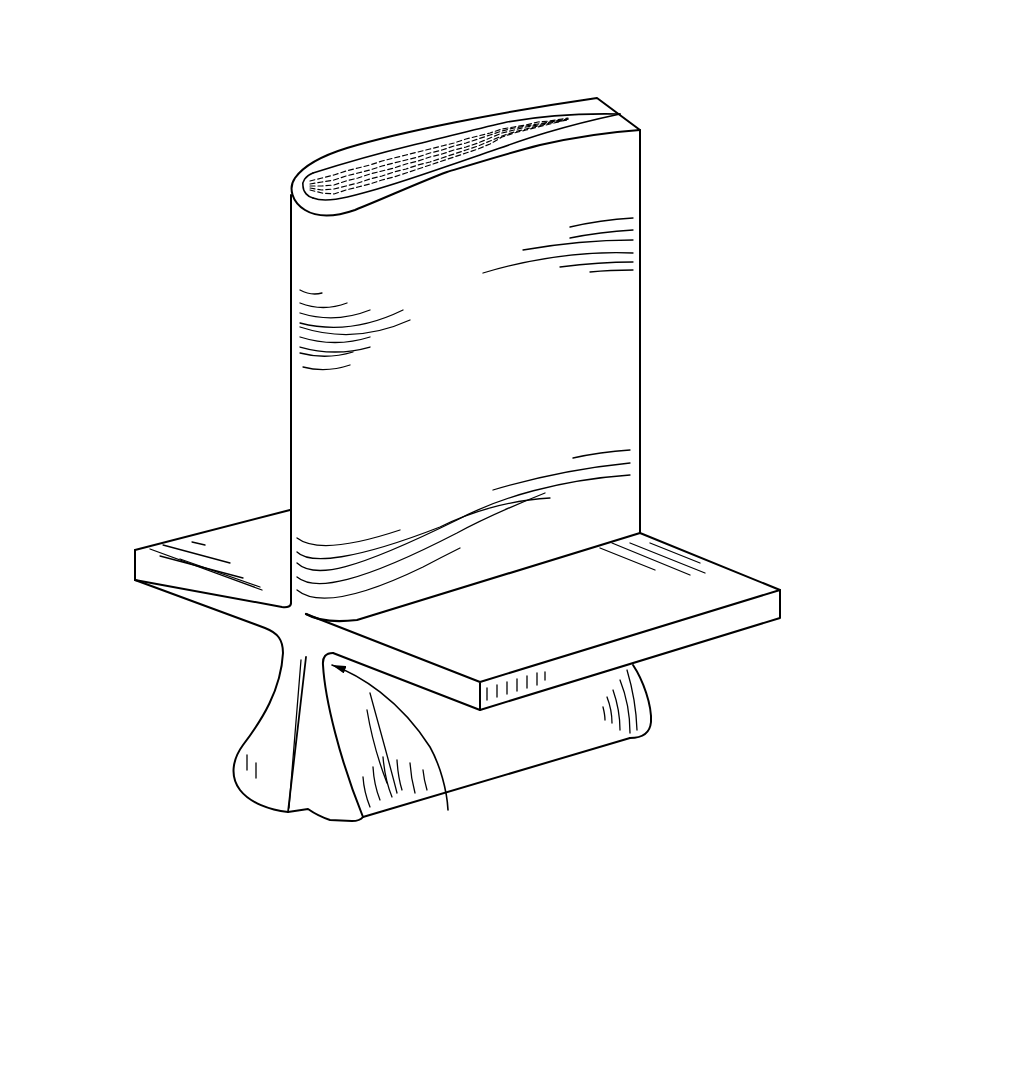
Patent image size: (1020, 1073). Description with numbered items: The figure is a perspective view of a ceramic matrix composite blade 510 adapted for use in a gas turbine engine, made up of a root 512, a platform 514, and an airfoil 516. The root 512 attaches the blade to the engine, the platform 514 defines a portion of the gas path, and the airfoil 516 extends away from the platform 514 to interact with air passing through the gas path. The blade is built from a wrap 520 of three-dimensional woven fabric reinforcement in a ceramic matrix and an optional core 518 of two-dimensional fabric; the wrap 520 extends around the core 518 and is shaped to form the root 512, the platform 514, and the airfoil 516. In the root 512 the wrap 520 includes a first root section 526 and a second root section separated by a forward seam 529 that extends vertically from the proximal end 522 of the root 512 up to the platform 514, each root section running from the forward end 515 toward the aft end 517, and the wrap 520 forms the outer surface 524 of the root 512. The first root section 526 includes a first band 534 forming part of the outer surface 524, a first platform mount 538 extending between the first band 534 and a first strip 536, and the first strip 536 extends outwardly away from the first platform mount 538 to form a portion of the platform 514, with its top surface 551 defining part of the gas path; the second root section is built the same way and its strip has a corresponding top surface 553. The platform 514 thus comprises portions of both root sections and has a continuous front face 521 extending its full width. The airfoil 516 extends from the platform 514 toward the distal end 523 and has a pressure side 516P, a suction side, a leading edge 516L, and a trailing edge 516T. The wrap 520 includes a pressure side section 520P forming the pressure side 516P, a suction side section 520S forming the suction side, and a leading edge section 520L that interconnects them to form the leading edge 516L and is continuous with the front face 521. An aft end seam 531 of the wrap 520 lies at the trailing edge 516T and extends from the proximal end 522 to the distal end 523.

The ceramic matrix composite blade 510 is at (203, 80).
The root 512 is at (577, 730).
The platform 514 is at (712, 593).
The forward end 515 is at (242, 743).
The airfoil 516 is at (607, 365).
The leading edge 516L is at (313, 323).
The trailing edge 516T is at (641, 183).
The pressure side 516P is at (552, 316).
The aft end 517 is at (643, 682).
The core 518 is at (427, 150).
The wrap 520 is at (571, 108).
The suction side section 520S is at (330, 256).
The leading edge section 520L is at (313, 357).
The pressure side section 520P is at (550, 402).
The front face 521 is at (167, 576).
The proximal end 522 is at (273, 678).
The distal end 523 is at (387, 148).
The outer surface 524 is at (330, 822).
The first root section 526 is at (523, 720).
The forward seam 529 is at (292, 757).
The aft end seam 531 is at (652, 263).
The first band 534 is at (358, 738).
The first strip 536 is at (452, 690).
The first platform mount 538 is at (450, 685).
The top surface 551 is at (642, 585).
The top surface 553 is at (248, 538).